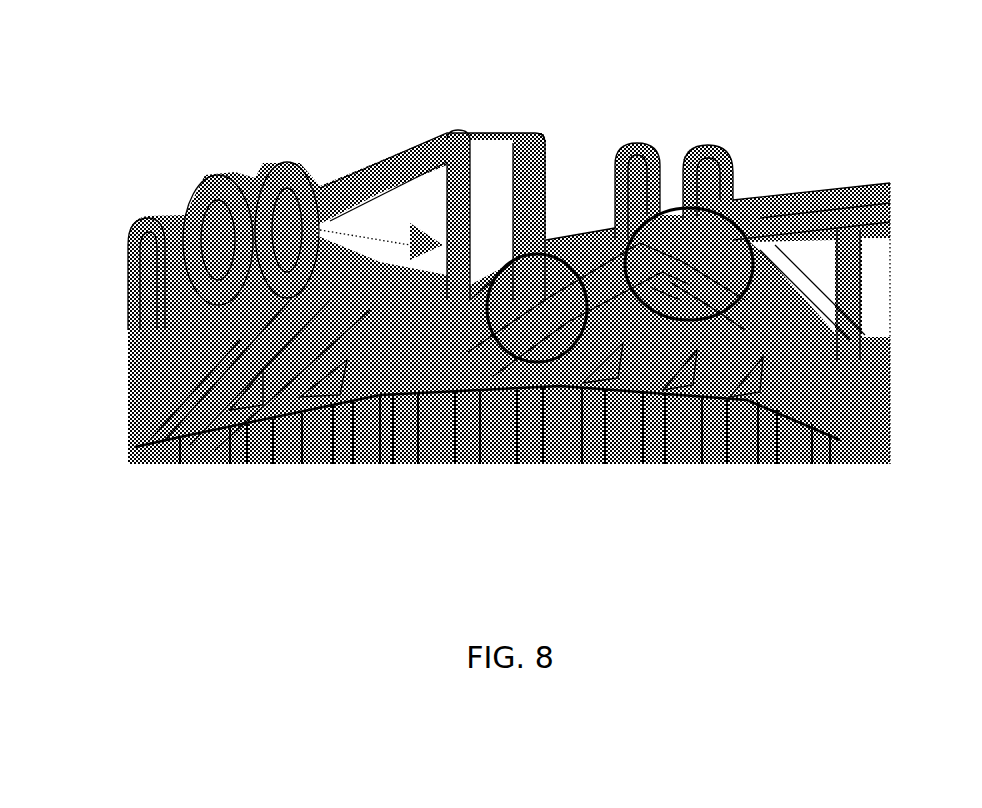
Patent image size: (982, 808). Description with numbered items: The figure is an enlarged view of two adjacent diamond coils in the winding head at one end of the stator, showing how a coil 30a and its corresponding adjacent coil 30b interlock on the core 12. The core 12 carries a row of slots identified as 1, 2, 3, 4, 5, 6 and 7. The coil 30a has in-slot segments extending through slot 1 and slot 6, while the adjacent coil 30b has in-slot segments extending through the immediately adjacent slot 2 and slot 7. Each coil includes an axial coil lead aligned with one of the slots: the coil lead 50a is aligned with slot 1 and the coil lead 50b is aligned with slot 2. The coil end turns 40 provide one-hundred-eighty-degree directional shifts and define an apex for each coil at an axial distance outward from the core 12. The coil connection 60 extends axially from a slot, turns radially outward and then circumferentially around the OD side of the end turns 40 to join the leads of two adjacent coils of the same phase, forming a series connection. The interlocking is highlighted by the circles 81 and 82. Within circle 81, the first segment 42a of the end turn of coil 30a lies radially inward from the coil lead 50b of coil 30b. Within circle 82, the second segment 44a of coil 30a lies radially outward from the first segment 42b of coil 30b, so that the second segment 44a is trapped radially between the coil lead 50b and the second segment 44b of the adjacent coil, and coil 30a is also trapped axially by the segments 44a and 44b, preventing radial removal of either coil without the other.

The core 12 is at (262, 442).
The slot 1 is at (467, 427).
The slot 2 is at (530, 426).
The slot 3 is at (593, 425).
The slot 4 is at (654, 427).
The slot 5 is at (714, 430).
The slot 6 is at (767, 433).
The slot 7 is at (821, 445).
The coil 30a is at (630, 133).
The corresponding adjacent coil 30b is at (727, 134).
The coil end turn 40 is at (172, 319).
The first segment of the end turn of coil 30a 42a is at (555, 298).
The first segment of the end turn of coil 30b 42b is at (650, 287).
The second segment of the end turn of coil 30a 44a is at (715, 285).
The second segment of the end turn of coil 30b 44b is at (755, 285).
The coil lead 50a is at (185, 212).
The coil lead 50b is at (528, 297).
The coil connection 60 is at (372, 146).
The circle 81 is at (517, 363).
The circle 82 is at (673, 208).